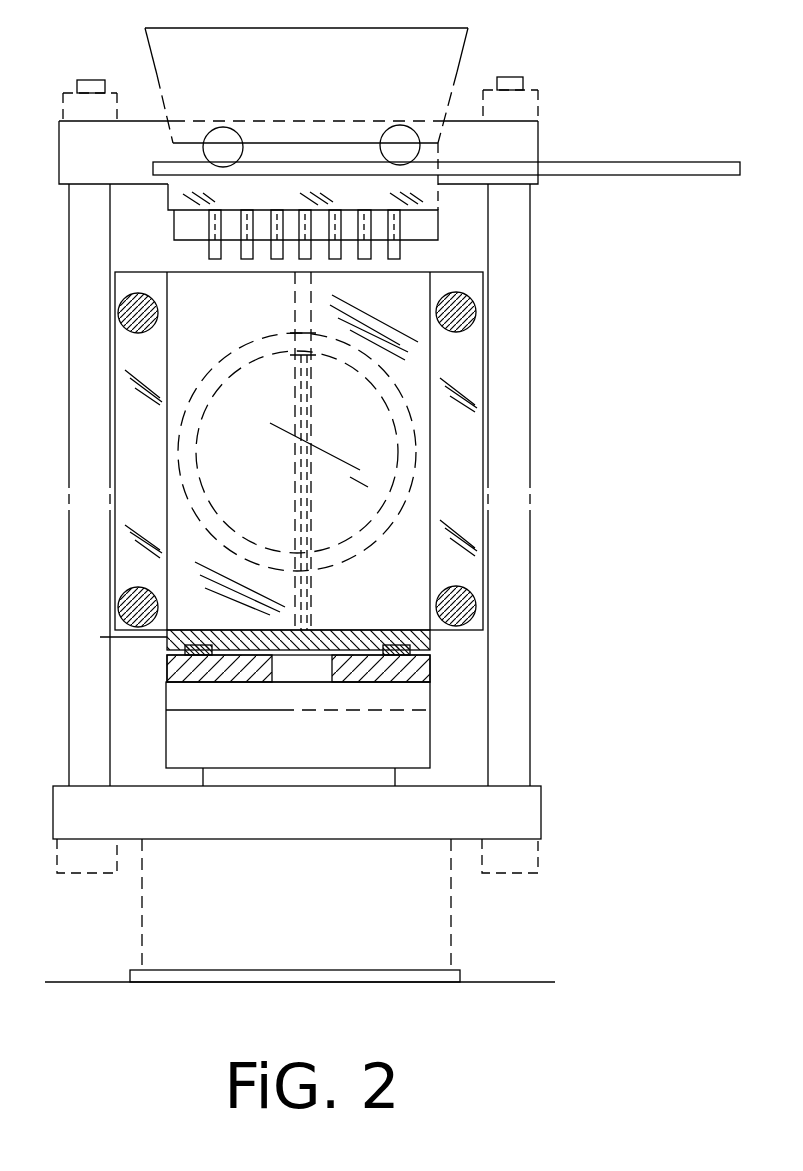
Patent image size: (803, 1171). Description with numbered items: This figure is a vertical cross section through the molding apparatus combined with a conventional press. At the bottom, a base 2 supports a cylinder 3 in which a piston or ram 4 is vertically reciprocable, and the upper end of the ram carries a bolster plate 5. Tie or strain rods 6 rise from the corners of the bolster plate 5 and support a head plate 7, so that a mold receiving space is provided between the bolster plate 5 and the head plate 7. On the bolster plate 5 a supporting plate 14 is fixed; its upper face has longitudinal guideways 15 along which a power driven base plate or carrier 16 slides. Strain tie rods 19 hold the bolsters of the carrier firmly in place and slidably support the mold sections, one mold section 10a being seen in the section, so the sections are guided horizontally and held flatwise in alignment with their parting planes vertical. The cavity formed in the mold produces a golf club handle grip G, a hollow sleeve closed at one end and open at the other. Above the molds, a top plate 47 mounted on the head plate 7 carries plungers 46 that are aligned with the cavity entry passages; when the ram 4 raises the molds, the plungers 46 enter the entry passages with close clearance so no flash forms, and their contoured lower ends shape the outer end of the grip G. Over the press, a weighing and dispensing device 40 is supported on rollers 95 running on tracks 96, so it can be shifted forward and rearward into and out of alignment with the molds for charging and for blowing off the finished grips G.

The base 2 is at (460, 970).
The cylinder 3 is at (445, 920).
The piston or ram 4 is at (397, 778).
The bolster plate 5 is at (417, 743).
The tie or strain rods 6 is at (75, 548).
The head plate 7 is at (533, 140).
The mold section 10a is at (417, 363).
The supporting plate 14 is at (425, 670).
The longitudinal guideways 15 is at (200, 650).
The base plate or carrier 16 is at (100, 637).
The strain tie rods 19 is at (458, 585).
The weighing and dispensing device 40 is at (475, 48).
The plungers 46 is at (400, 250).
The top plate 47 is at (420, 190).
The rollers 95 is at (230, 130).
The tracks 96 is at (610, 163).
The golf club handle grip G is at (304, 360).